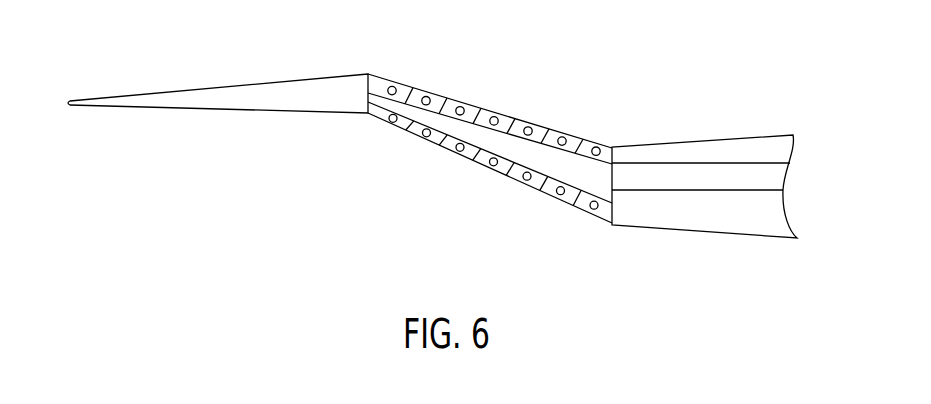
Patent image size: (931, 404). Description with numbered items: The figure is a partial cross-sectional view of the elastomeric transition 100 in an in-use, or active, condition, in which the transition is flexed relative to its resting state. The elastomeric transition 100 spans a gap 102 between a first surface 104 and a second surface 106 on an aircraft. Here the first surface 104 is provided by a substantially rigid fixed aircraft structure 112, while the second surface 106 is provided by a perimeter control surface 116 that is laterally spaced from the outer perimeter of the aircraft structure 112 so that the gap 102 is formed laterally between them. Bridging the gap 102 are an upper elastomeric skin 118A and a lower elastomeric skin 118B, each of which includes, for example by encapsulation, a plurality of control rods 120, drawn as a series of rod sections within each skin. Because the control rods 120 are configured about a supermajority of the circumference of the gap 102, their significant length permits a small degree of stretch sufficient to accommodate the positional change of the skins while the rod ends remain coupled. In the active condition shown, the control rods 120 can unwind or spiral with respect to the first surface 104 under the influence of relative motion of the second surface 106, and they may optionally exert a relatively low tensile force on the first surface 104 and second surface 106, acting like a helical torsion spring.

The elastomeric transition 100 is at (598, 83).
The gap 102 is at (348, 148).
The first surface 104 is at (704, 206).
The fixed aircraft structure 112 is at (725, 223).
The second surface 106 is at (218, 118).
The perimeter control surface 116 is at (192, 108).
The upper elastomeric skin 118A is at (517, 102).
The lower elastomeric skin 118B is at (543, 197).
The control rods 120 is at (422, 96).